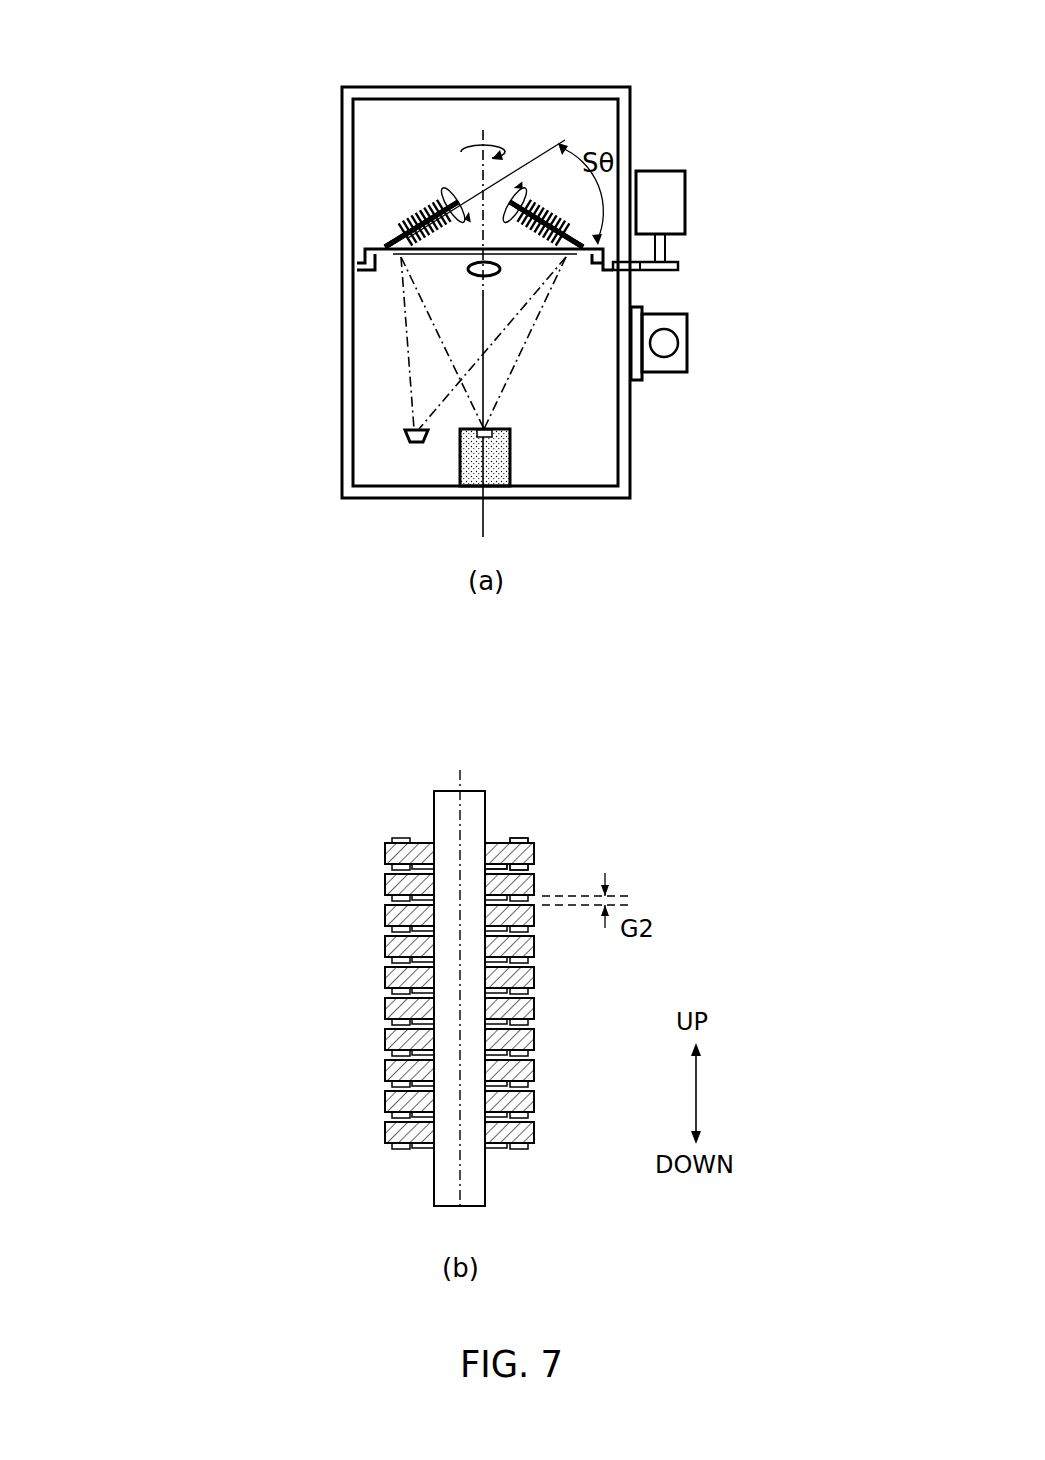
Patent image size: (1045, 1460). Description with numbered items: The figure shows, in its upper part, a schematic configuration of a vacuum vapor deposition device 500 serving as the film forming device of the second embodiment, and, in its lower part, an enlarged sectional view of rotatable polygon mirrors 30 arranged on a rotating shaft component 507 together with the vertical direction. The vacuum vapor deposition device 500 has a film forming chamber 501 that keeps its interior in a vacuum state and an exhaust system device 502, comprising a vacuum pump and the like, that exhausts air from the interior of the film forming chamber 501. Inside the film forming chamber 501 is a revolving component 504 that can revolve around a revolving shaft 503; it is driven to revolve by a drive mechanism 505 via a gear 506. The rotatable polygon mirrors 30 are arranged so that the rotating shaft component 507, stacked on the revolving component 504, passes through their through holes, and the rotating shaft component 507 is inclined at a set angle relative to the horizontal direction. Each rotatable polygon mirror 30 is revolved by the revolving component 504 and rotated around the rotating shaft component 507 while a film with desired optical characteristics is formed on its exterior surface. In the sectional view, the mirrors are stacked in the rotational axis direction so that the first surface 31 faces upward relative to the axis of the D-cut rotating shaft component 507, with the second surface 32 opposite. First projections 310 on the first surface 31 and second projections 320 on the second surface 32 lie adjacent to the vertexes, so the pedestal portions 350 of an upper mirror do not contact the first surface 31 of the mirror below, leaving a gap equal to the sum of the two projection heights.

The vacuum vapor deposition device 500 is at (312, 58).
The film forming chamber 501 is at (430, 93).
The exhaust system device 502 is at (665, 373).
The revolving shaft 503 is at (483, 178).
The revolving component 504 is at (360, 262).
The drive mechanism 505 is at (660, 185).
The gear 506 is at (632, 272).
The rotating shaft component 507 is at (455, 206).
The rotatable polygon mirror 30 is at (428, 222).
The first surface 31 is at (418, 843).
The second surface 32 is at (385, 882).
The pedestal portion 350 is at (498, 866).
The first projections 310 is at (520, 839).
The second projections 320 is at (528, 864).